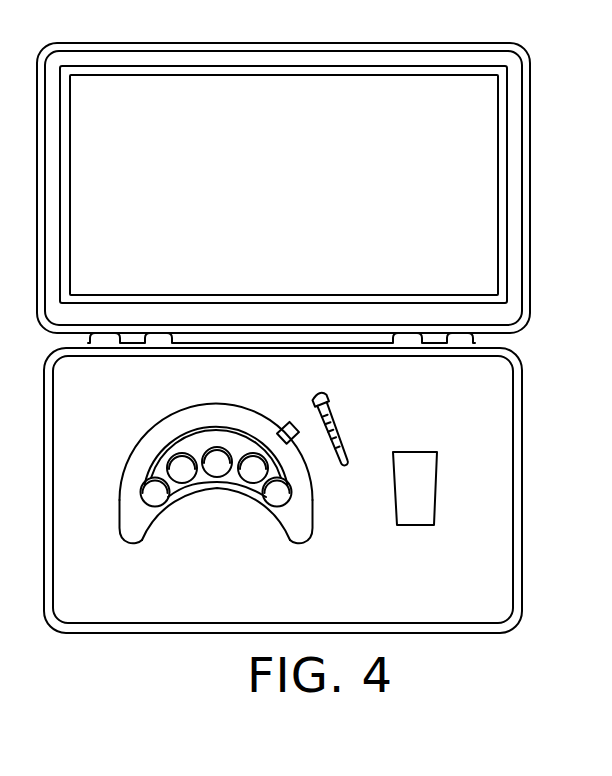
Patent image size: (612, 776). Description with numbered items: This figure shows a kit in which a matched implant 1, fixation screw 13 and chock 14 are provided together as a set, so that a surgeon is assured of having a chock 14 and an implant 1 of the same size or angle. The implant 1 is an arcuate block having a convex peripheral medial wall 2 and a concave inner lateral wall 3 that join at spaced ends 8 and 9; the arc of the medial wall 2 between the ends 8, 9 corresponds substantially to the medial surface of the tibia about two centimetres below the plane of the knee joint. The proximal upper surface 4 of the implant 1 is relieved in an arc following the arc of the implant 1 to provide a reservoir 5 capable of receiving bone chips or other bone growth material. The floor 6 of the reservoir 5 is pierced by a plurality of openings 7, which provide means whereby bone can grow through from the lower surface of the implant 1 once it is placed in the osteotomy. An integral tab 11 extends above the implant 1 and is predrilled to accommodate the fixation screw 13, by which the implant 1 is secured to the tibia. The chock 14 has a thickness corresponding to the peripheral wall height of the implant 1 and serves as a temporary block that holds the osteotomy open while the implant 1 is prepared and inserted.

The implant 1 is at (118, 433).
The medial wall 2 is at (209, 403).
The lateral wall 3 is at (240, 490).
The upper surface 4 is at (167, 434).
The reservoir 5 is at (230, 427).
The floor 6 is at (200, 478).
The openings 7 is at (150, 493).
The end 8 is at (293, 541).
The end 9 is at (141, 543).
The tab 11 is at (283, 420).
The fixation screw 13 is at (333, 412).
The chock 14 is at (425, 483).